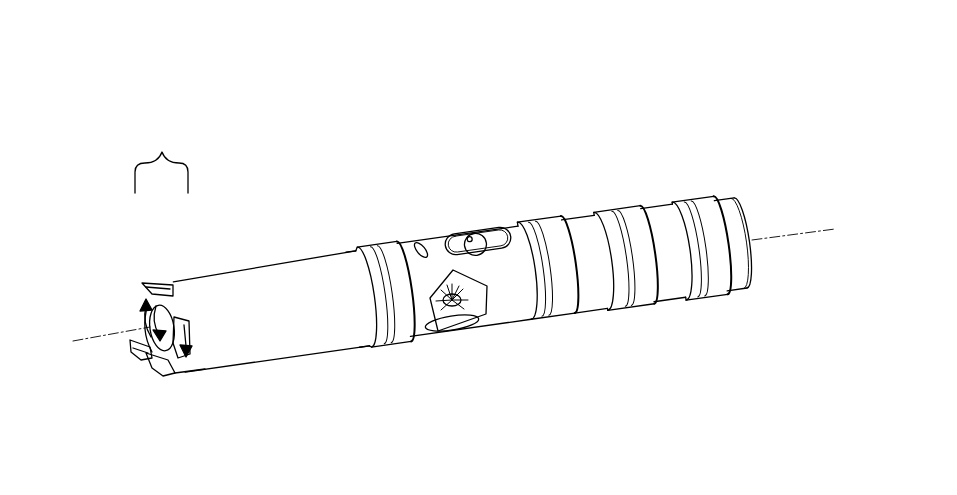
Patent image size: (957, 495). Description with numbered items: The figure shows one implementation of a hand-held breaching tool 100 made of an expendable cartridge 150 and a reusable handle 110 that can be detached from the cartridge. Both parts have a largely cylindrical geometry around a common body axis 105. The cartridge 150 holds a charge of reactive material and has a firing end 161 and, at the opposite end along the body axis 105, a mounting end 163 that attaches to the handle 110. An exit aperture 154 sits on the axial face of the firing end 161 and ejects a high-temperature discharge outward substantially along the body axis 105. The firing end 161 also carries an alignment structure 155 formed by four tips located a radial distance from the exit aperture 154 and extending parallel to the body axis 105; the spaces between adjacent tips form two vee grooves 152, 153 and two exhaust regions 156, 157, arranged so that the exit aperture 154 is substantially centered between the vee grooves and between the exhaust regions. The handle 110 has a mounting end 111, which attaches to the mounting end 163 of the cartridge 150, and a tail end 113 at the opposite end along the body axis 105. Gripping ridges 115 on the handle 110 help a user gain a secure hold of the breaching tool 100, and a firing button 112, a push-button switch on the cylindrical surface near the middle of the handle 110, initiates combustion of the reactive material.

The breaching tool 100 is at (229, 82).
The body axis 105 is at (128, 331).
The handle 110 is at (603, 240).
The mounting end 111 is at (392, 348).
The firing button 112 is at (481, 247).
The tail end 113 is at (733, 283).
The gripping ridges 115 is at (552, 227).
The cartridge 150 is at (258, 287).
The vee groove 152 is at (172, 285).
The vee groove 153 is at (160, 358).
The exit aperture 154 is at (138, 350).
The alignment structure 155 is at (158, 266).
The exhaust region 156 is at (143, 302).
The exhaust region 157 is at (189, 353).
The firing end 161 is at (190, 373).
The mounting end 163 is at (367, 335).